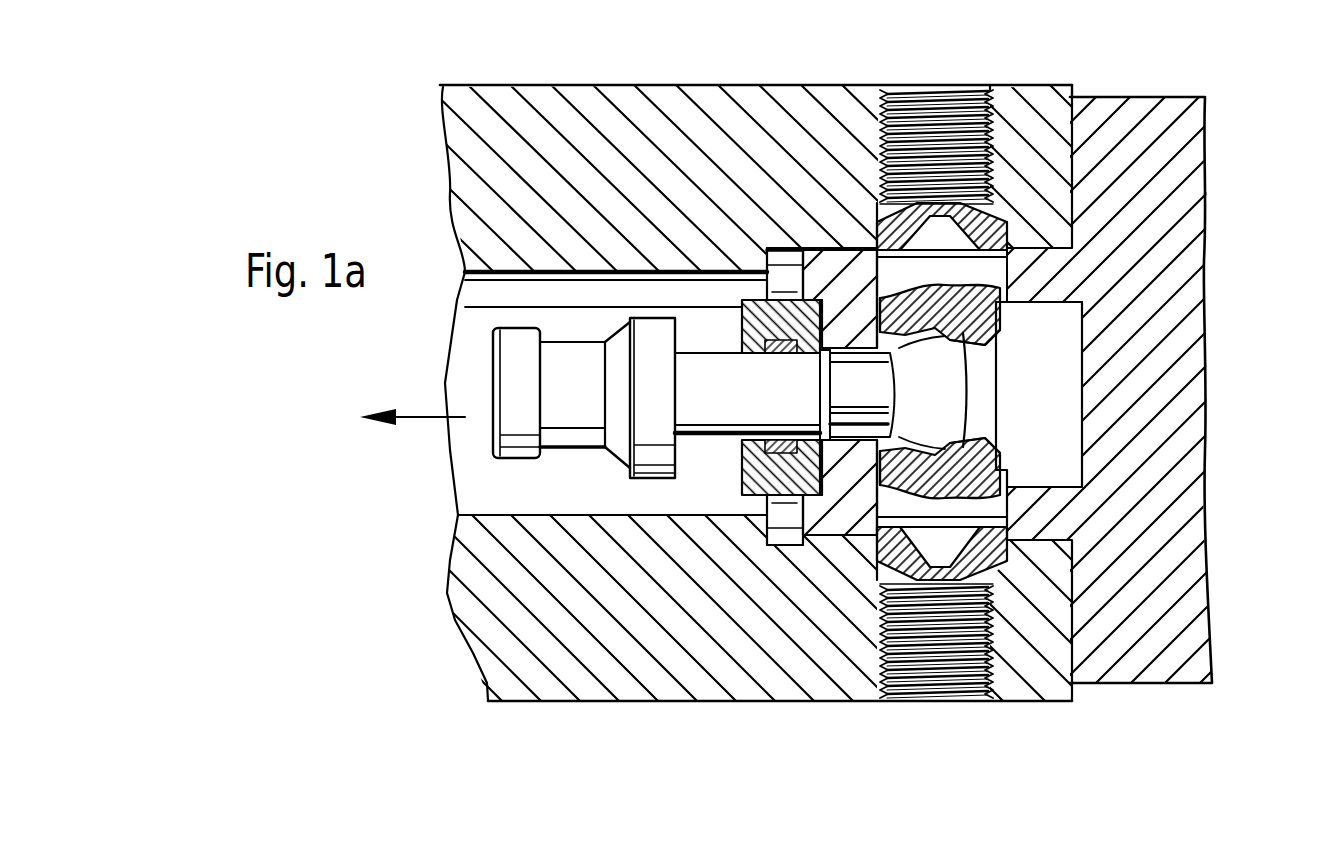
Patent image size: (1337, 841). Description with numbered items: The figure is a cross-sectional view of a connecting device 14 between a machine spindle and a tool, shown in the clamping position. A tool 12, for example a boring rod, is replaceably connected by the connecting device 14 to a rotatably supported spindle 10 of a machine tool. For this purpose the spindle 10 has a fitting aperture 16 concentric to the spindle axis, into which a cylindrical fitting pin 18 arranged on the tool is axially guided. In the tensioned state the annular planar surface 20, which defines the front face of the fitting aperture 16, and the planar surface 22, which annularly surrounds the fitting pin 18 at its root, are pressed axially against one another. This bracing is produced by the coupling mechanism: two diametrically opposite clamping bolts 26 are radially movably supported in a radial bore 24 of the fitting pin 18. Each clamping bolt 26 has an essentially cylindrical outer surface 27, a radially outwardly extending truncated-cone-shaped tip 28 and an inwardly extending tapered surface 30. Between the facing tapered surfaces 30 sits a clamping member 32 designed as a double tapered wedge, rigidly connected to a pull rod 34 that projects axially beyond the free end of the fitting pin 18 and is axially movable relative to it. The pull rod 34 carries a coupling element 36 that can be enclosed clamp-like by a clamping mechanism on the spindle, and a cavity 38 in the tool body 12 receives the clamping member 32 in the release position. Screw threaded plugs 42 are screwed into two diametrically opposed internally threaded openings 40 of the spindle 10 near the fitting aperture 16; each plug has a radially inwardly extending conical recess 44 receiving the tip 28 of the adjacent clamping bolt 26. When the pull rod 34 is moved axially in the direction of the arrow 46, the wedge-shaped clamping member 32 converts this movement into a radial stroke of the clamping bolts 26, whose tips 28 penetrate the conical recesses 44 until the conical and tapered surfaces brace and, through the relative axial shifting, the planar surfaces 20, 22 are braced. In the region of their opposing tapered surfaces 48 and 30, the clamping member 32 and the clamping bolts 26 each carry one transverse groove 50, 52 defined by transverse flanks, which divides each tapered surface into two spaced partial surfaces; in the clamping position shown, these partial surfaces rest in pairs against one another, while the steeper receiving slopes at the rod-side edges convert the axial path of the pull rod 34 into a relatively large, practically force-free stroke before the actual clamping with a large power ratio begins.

The spindle 10 is at (609, 130).
The tool 12 is at (1165, 160).
The connecting device 14 is at (845, 236).
The fitting aperture 16 is at (838, 508).
The fitting pin 18 is at (815, 495).
The annular planar surface 20 is at (1073, 150).
The planar surface 22 is at (1047, 85).
The radial bore 24 is at (862, 510).
The clamping bolt 26 is at (877, 235).
The cylindrical outer surface 27 is at (840, 540).
The truncated-cone-shaped tip 28 is at (943, 236).
The tapered surface 30 is at (1000, 298).
The clamping member 32 is at (985, 400).
The pull rod 34 is at (707, 417).
The coupling element 36 is at (565, 420).
The cavity 38 is at (1068, 318).
The internally threaded opening 40 is at (974, 128).
The screw threaded plug 42 is at (920, 600).
The conical recess 44 is at (893, 280).
The arrow 46 is at (425, 420).
The tapered surface 48 is at (1010, 322).
The transverse groove 50 is at (942, 391).
The transverse groove 52 is at (1000, 325).